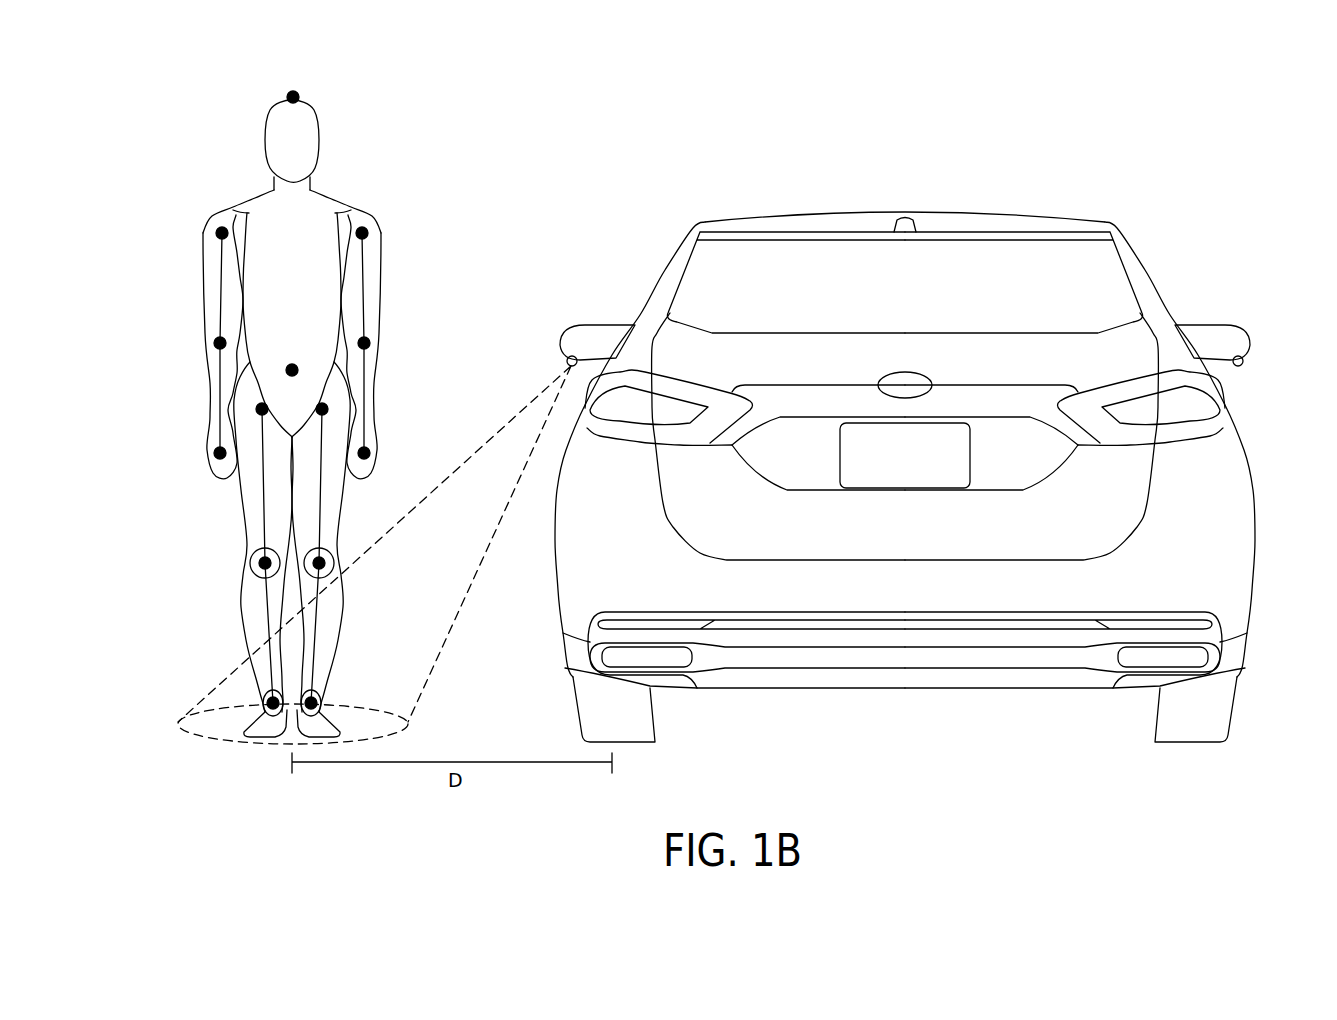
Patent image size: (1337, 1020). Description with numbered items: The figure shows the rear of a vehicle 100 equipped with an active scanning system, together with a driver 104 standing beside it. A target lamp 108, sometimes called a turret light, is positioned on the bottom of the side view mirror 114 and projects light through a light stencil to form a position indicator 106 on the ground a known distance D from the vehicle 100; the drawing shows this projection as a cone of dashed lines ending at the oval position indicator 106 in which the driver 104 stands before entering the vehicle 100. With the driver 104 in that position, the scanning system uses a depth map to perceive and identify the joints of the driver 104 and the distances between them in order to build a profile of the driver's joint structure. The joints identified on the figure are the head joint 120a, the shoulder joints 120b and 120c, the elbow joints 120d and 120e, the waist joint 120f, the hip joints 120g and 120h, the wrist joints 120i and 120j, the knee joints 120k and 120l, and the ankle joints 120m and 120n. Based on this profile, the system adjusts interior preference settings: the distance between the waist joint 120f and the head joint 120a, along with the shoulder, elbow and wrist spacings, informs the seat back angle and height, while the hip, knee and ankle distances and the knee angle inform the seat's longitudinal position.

The vehicle 100 is at (1013, 212).
The driver 104 is at (320, 140).
The position indicator 106 is at (207, 741).
The target lamp 108 is at (566, 362).
The side view mirror 114 is at (585, 325).
The head joint 120a is at (298, 97).
The shoulder joint 120b is at (216, 233).
The shoulder joint 120c is at (368, 233).
The elbow joint 120d is at (214, 343).
The elbow joint 120e is at (370, 343).
The waist joint 120f is at (292, 364).
The hip joint 120g is at (256, 409).
The hip joint 120h is at (328, 409).
The wrist joint 120i is at (214, 453).
The wrist joint 120j is at (370, 453).
The knee joint 120k is at (259, 563).
The knee joint 120l is at (325, 563).
The ankle joint 120m is at (267, 703).
The ankle joint 120n is at (317, 703).